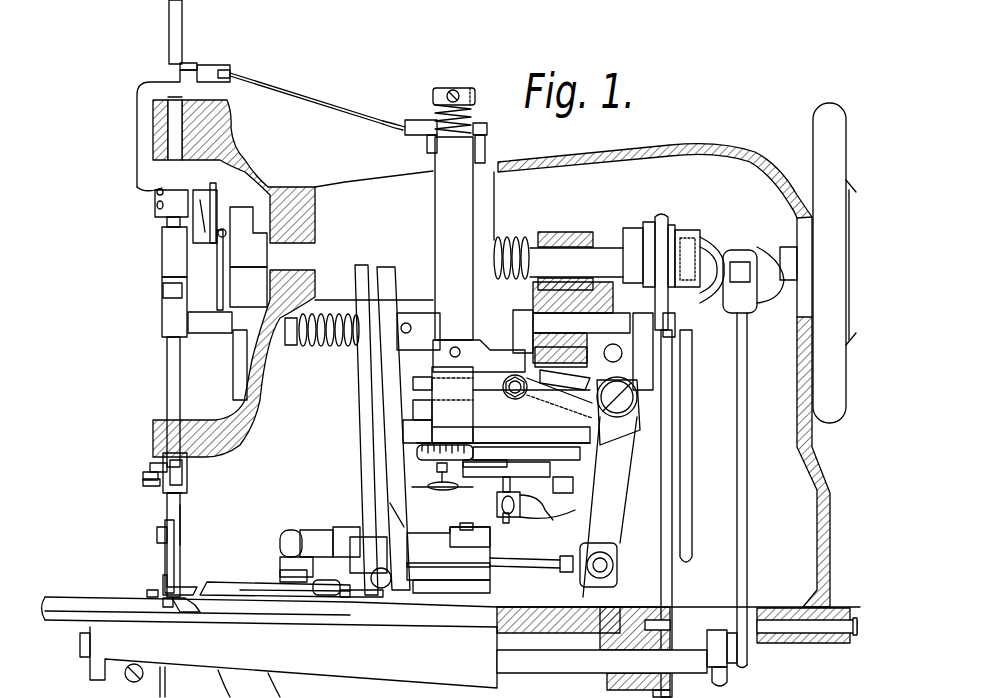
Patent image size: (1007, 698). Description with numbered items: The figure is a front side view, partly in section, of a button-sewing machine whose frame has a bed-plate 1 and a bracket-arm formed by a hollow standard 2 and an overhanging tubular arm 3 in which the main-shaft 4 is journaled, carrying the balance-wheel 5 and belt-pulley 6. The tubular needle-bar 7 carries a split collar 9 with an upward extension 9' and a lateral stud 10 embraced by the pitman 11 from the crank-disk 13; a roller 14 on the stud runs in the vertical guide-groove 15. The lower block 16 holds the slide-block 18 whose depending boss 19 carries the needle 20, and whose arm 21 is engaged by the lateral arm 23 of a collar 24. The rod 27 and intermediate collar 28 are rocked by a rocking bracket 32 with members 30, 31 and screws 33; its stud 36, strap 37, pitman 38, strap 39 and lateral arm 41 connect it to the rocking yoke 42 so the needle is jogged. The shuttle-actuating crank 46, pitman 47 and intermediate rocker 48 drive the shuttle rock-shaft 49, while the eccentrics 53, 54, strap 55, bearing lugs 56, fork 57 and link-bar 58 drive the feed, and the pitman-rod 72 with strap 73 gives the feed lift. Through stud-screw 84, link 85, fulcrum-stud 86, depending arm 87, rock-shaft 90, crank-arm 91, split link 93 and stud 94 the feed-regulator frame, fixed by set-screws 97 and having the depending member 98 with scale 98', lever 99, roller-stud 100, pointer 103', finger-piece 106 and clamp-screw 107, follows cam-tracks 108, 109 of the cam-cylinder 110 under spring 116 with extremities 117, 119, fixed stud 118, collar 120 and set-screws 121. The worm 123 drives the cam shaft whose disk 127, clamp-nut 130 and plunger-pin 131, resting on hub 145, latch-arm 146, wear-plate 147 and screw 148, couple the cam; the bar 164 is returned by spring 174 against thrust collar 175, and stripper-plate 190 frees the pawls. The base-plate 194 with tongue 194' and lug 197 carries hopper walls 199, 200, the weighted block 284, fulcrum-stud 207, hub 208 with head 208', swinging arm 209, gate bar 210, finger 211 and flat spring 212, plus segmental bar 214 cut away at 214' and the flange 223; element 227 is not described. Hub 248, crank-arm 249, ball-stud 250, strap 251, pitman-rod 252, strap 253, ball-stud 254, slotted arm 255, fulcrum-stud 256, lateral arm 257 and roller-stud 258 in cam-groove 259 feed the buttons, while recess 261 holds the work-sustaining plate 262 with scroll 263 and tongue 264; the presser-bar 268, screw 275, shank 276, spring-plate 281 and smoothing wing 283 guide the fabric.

The bed-plate 1 is at (436, 620).
The hollow standard 2 is at (808, 450).
The overhanging tubular arm 3 is at (482, 300).
The main-shaft 4 is at (576, 262).
The balance-wheel 5 is at (829, 263).
The belt-pulley 6 is at (850, 190).
The tubular needle-bar 7 is at (167, 383).
The split collar 9 is at (174, 307).
The upward extension of split collar 9' is at (174, 252).
The lateral stud 10 is at (227, 335).
The pitman 11 is at (217, 284).
The crank-disk 13 is at (248, 237).
The roller 14 is at (248, 287).
The vertical guide-groove 15 is at (237, 366).
The block 16 is at (187, 468).
The needle-carrying slide-block 18 is at (182, 478).
The depending boss 19 is at (182, 493).
The needle 20 is at (167, 502).
The laterally extending arm 21 is at (143, 483).
The lateral arm 23 is at (143, 475).
The collar 24 is at (150, 466).
The rod 27 is at (168, 126).
The intermediate collar 28 is at (163, 291).
The spaced member of rocking bracket 30 is at (163, 193).
The upper member of rocking bracket 31 is at (173, 99).
The rocking bracket 32 is at (137, 146).
The screws 33 is at (157, 205).
The stud 36 is at (190, 63).
The strap 37 is at (214, 74).
The pitman 38 is at (315, 101).
The strap 39 is at (418, 120).
The lateral arm of rocking yoke 41 is at (427, 143).
The rocking yoke 42 is at (454, 238).
The shuttle-actuating crank 46 is at (735, 313).
The pitman 47 is at (747, 491).
The intermediate rocker 48 is at (717, 640).
The shuttle-actuating rock-shaft 49 is at (552, 674).
The feed-actuating eccentric 53 is at (673, 222).
The feed-lift eccentric 54 is at (700, 242).
The strap 55 is at (648, 222).
The channeled bearing lugs 56 is at (633, 255).
The fork 57 is at (661, 211).
The link-bar 58 is at (662, 440).
The pitman-rod 72 is at (692, 470).
The strap 73 is at (716, 296).
The stud-screw 84 is at (675, 330).
The link 85 is at (643, 351).
The fulcrum-stud 86 is at (617, 397).
The depending arm 87 is at (630, 356).
The rock-shaft 90 is at (581, 323).
The depending crank-arm 91 is at (513, 337).
The split link 93 is at (565, 380).
The stud 94 is at (561, 359).
The set-screws 97 is at (460, 353).
The depending member 98 is at (443, 405).
The segmental scale 98' is at (445, 435).
The lateral arm or lever 99 is at (437, 468).
The roller-stud 100 is at (414, 431).
The pointer 103' is at (464, 452).
The finger-piece 106 is at (485, 467).
The clamp-screw 107 is at (442, 495).
The cam-track 108 is at (503, 435).
The cam-track 109 is at (526, 453).
The cam-cylinder 110 is at (531, 402).
The spring 116 is at (471, 113).
The spring extremity 117 is at (487, 129).
The fixed stud 118 is at (485, 143).
The spring extremity 119 is at (470, 89).
The collar 120 is at (436, 90).
The set-screws 121 is at (453, 90).
The worm 123 is at (512, 238).
The disk 127 is at (506, 469).
The clamp-nut 130 is at (561, 485).
The plunger-pin 131 is at (503, 487).
The hub 145 is at (548, 517).
The latch-arm 146 is at (540, 507).
The wear-plate 147 is at (497, 501).
The screw 148 is at (497, 519).
The bar 164 is at (334, 346).
The spring 174 is at (314, 346).
The thrust collar 175 is at (288, 345).
The stripper-plate 190 is at (315, 532).
The base-plate 194 is at (275, 583).
The segmental tongue 194' is at (355, 590).
The lug 197 is at (371, 578).
The flat bar 199 is at (390, 498).
The side wall 200 is at (396, 294).
The fulcrum-stud 207 is at (474, 519).
The hub 208 is at (470, 579).
The angular head 208' is at (466, 550).
The swinging arm 209 is at (448, 547).
The upright bar 210 is at (395, 500).
The finger 211 is at (369, 555).
The flat spring 212 is at (450, 535).
The segmental bar 214 is at (266, 608).
The cut-away portion 214' is at (386, 612).
The upturned lip or flange 223 is at (325, 595).
The plate 227 is at (285, 596).
The hub 248 is at (345, 535).
The crank-arm 249 is at (280, 578).
The ball-stud 250 is at (290, 560).
The strap 251 is at (288, 531).
The pitman-rod 252 is at (532, 560).
The strap 253 is at (573, 553).
The ball-stud 254 is at (607, 565).
The slotted depending arm 255 is at (610, 507).
The fulcrum-stud 256 is at (617, 417).
The lateral arm 257 is at (559, 398).
The roller-stud 258 is at (515, 394).
The cam-groove 259 is at (503, 388).
The recess 261 is at (198, 608).
The work-sustaining plate 262 is at (451, 612).
The edge turning scroll 263 is at (185, 612).
The central tongue 264 is at (170, 610).
The presser-bar 268 is at (181, 512).
The fastening screw 275 is at (157, 535).
The shank 276 is at (165, 560).
The spring-plate 281 is at (147, 594).
The fabric smoothing wing 283 is at (190, 592).
The heavy block 284 is at (361, 478).